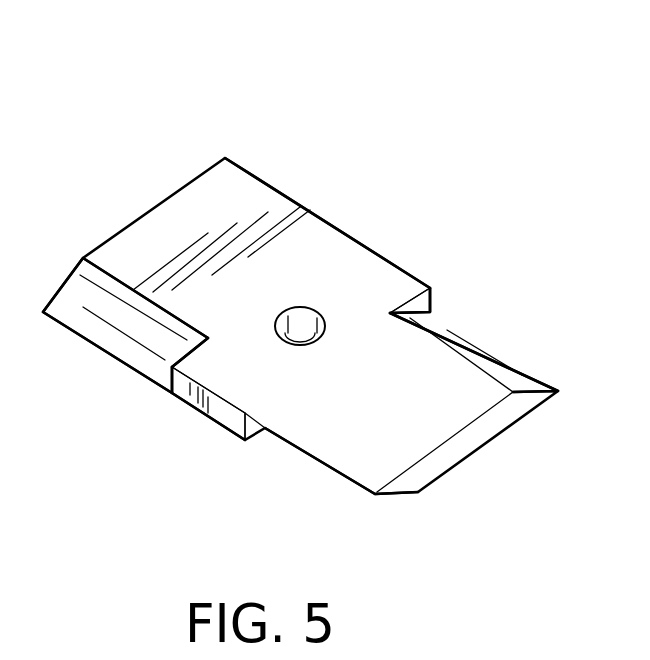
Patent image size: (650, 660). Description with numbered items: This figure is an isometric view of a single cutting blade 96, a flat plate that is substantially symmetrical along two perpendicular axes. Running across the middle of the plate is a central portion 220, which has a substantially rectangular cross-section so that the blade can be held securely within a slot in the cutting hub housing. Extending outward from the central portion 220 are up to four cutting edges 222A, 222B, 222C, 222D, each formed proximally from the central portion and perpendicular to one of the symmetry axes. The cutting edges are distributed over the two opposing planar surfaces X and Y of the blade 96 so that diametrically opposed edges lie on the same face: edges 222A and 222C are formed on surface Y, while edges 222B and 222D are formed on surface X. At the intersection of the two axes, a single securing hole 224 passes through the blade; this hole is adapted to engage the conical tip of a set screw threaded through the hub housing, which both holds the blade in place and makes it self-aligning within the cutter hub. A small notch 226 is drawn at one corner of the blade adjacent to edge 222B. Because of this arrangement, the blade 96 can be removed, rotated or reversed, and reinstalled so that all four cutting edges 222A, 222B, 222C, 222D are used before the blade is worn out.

The cutting blade 96 is at (299, 298).
The central portion 220 is at (210, 418).
The cutting edge 222A is at (273, 184).
The cutting edge 222B is at (485, 347).
The cutting edge 222C is at (319, 461).
The cutting edge 222D is at (92, 345).
The securing hole 224 is at (310, 309).
The notch 226 is at (378, 292).
The planar surface X is at (186, 226).
The planar surface Y is at (469, 464).